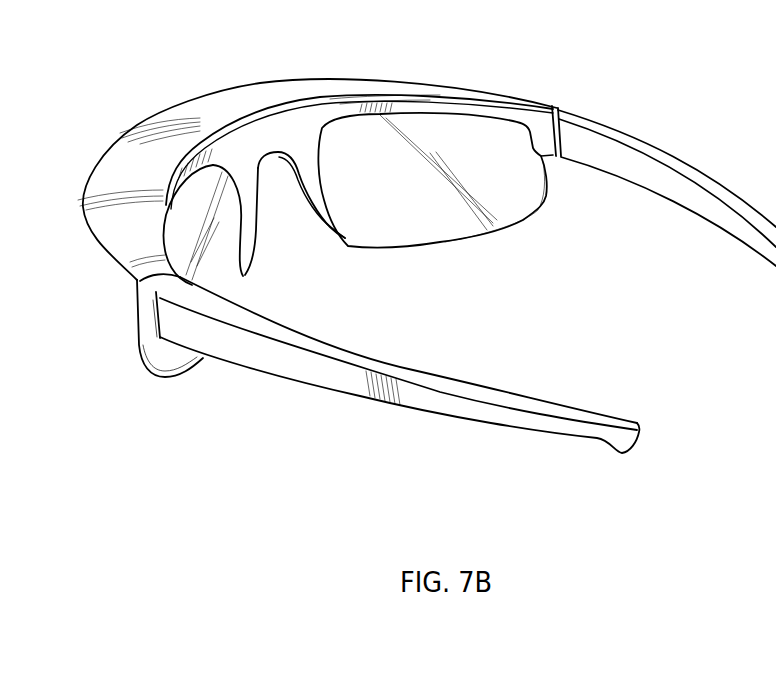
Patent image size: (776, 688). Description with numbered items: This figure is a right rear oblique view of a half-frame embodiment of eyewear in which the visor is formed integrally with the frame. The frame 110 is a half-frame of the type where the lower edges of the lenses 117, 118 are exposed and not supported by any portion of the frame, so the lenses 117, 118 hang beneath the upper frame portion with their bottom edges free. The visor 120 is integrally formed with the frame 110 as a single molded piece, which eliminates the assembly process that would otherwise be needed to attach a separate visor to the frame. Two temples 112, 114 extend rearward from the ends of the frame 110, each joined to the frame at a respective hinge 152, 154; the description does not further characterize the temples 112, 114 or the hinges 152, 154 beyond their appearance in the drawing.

The frame 110 is at (411, 245).
The first temple 112 is at (245, 342).
The second temple 114 is at (677, 167).
The lens 117 is at (229, 272).
The lens 118 is at (512, 210).
The visor 120 is at (192, 110).
The first hinge 152 is at (158, 292).
The second hinge 154 is at (558, 110).